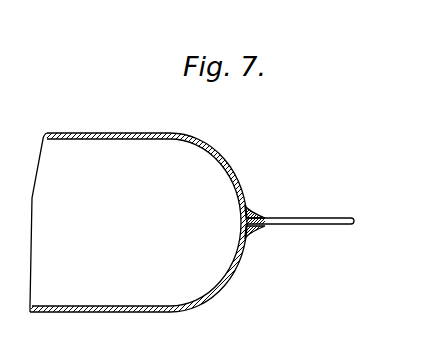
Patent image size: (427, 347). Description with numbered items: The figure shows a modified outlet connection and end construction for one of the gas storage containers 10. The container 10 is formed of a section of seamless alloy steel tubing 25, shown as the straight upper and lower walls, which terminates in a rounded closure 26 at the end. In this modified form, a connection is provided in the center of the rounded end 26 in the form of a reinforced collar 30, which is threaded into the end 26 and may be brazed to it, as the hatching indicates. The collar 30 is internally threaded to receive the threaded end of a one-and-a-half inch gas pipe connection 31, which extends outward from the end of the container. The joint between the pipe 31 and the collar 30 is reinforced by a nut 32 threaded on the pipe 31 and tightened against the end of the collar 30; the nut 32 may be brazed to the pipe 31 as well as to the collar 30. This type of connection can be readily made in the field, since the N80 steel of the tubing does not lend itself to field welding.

The container 10 is at (56, 132).
The seamless alloy steel tubing 25 is at (127, 133).
The rounded closure 26 is at (233, 176).
The reinforced collar 30 is at (253, 210).
The gas pipe connection 31 is at (327, 221).
The nut 32 is at (262, 229).